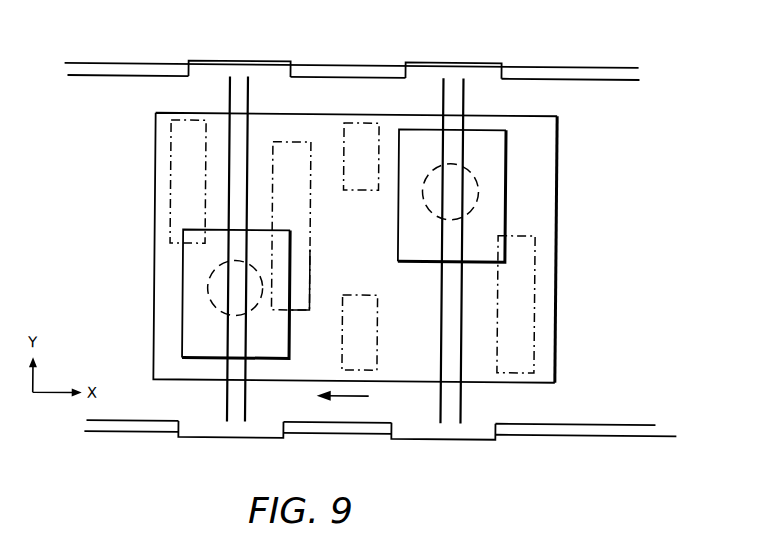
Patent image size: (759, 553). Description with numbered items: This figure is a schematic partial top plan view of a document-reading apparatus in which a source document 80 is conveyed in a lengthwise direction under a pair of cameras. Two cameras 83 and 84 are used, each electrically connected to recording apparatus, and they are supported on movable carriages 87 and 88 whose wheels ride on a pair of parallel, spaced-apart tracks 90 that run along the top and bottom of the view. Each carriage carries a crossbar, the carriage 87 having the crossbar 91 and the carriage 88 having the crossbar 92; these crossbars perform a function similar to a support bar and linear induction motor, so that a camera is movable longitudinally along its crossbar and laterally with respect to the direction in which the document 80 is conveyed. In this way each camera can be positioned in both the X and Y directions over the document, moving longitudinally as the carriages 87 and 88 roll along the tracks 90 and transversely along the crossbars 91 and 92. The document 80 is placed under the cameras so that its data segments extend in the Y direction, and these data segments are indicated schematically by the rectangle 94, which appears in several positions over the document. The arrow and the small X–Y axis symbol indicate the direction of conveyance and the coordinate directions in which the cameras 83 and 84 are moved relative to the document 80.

The source document 80 is at (556, 150).
The camera 83 is at (183, 332).
The camera 84 is at (379, 247).
The movable carriage 87 is at (220, 33).
The movable carriage 88 is at (435, 62).
The tracks 90 is at (570, 66).
The crossbar 91 is at (228, 97).
The crossbar 92 is at (463, 88).
The rectangle indicating data segments 94 is at (170, 148).